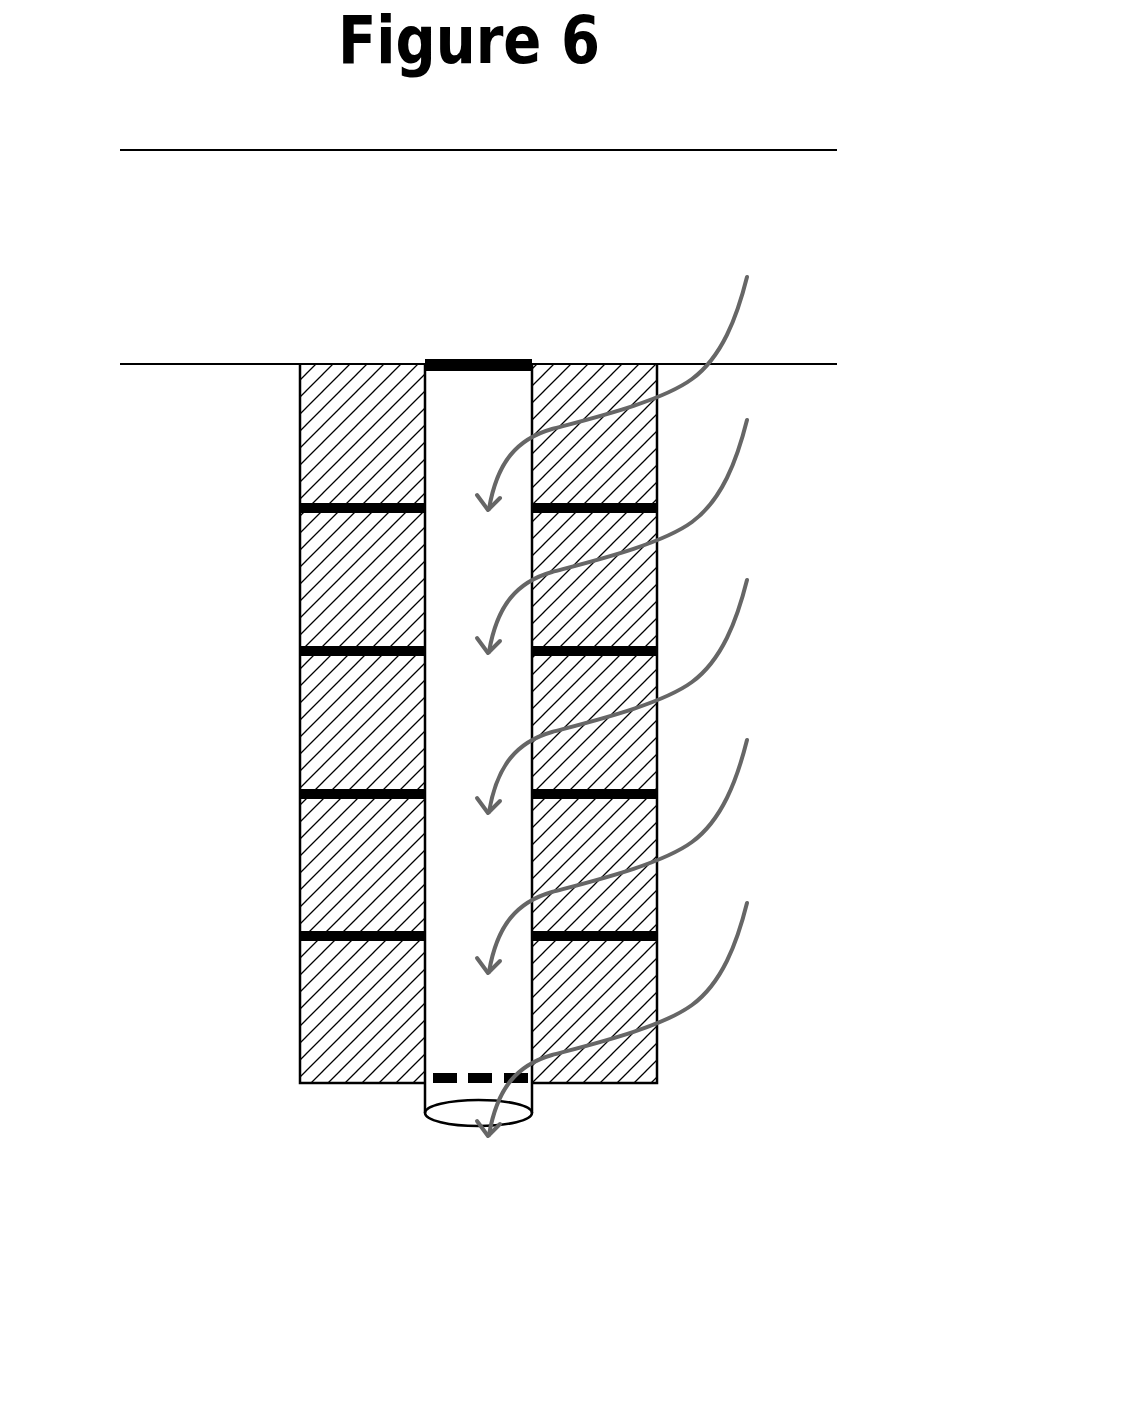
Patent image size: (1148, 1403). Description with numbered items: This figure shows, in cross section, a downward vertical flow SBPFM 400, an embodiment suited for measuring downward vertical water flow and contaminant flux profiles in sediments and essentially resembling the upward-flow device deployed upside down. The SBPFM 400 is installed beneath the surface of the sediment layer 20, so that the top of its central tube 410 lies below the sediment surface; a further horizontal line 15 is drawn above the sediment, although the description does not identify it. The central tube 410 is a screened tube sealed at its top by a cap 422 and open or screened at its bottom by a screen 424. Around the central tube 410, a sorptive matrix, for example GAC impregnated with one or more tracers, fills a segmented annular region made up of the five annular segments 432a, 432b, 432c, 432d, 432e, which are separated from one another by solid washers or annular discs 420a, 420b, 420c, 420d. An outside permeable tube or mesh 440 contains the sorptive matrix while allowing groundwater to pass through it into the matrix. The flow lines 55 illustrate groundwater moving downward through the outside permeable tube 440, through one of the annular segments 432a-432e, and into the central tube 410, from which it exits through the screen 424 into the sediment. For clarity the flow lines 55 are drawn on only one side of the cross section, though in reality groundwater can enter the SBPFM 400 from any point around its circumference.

The surface 15 is at (753, 150).
The sediment layer 20 is at (763, 364).
The flow lines 55 is at (728, 470).
The downward vertical flow SBPFM 400 is at (406, 699).
The central tube 410 is at (440, 1123).
The annular disc 420a is at (300, 508).
The annular disc 420b is at (300, 651).
The annular disc 420c is at (300, 794).
The annular disc 420d is at (300, 936).
The cap 422 is at (502, 360).
The screen 424 is at (528, 1083).
The annular segment 432a is at (343, 437).
The annular segment 432b is at (343, 581).
The annular segment 432c is at (343, 722).
The annular segment 432d is at (343, 864).
The annular segment 432e is at (343, 1026).
The outside permeable tube 440 is at (300, 1053).